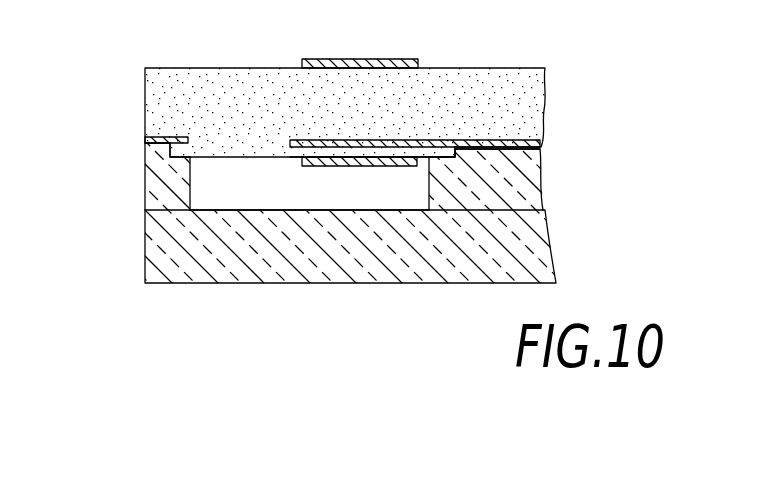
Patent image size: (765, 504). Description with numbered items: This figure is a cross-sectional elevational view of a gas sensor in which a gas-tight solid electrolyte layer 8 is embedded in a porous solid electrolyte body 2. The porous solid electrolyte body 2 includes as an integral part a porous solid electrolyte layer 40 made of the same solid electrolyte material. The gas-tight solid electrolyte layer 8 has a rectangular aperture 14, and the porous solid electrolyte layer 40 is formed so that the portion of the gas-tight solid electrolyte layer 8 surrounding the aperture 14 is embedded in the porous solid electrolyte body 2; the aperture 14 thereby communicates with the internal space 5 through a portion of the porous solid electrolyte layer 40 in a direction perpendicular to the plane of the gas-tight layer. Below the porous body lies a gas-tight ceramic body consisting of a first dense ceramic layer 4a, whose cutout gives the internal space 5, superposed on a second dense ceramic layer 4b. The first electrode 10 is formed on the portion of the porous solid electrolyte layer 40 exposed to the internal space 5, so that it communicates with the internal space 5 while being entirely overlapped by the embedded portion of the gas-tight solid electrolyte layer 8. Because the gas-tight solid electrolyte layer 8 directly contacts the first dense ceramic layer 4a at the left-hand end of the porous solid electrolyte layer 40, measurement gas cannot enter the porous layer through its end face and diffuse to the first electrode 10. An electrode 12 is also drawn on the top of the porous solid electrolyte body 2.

The porous solid electrolyte body 2 is at (170, 80).
The upper electrode pad 12 is at (373, 58).
The gas-tight solid electrolyte layer 8 is at (453, 150).
The aperture 14 is at (288, 146).
The porous solid electrolyte layer 40 is at (447, 152).
The first dense ceramic layer 4a is at (163, 164).
The second dense ceramic layer 4b is at (163, 240).
The internal space 5 is at (225, 192).
The first electrode 10 is at (361, 166).